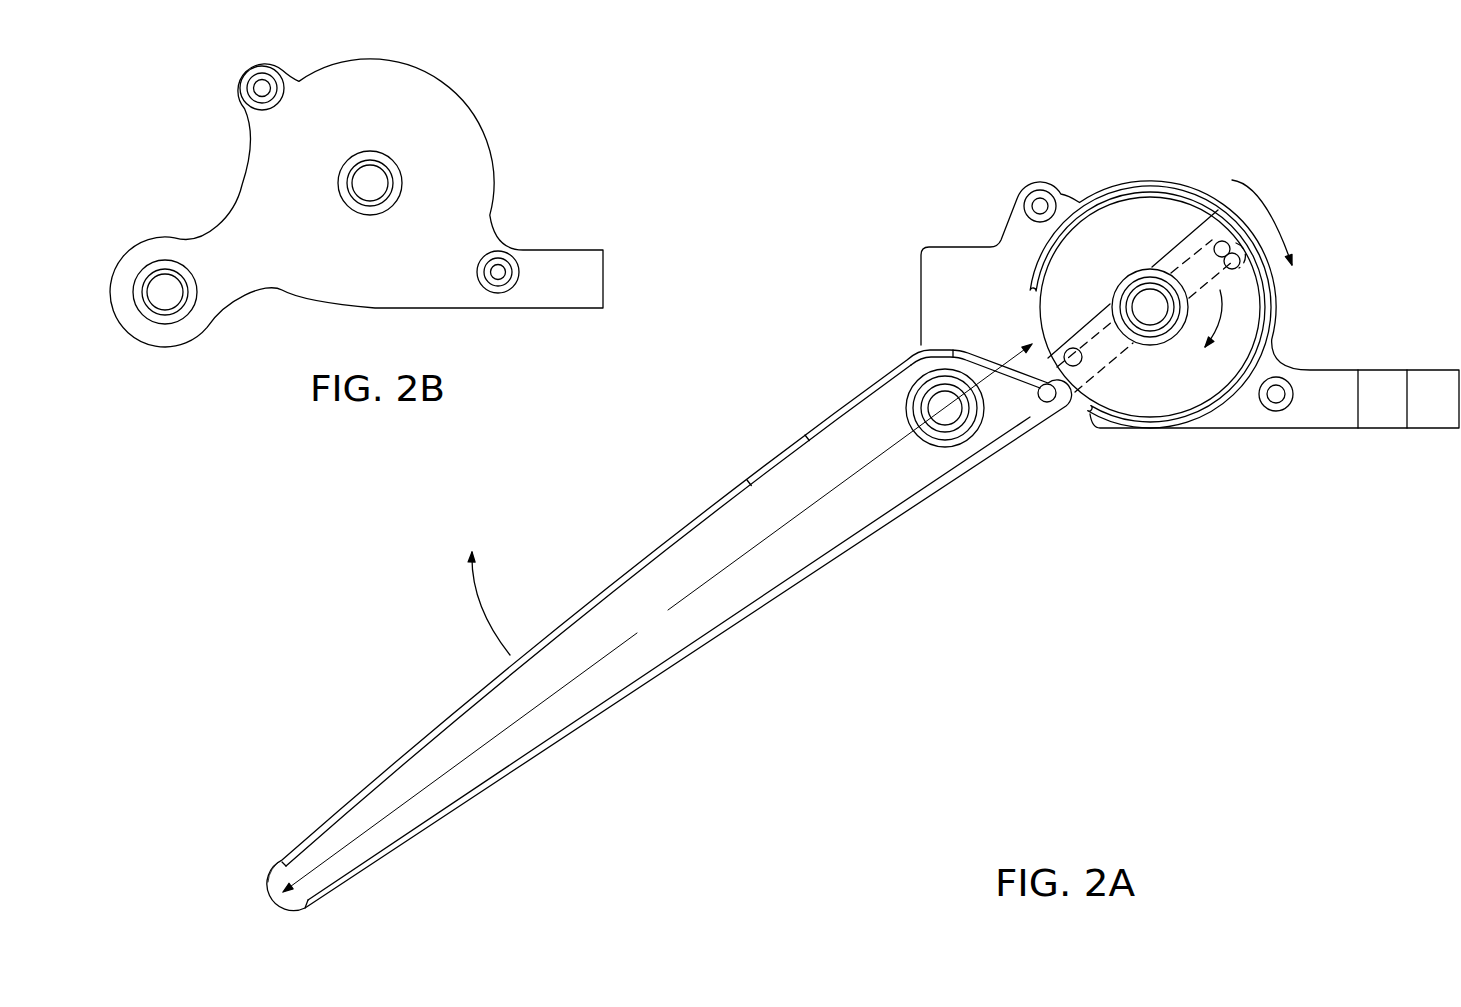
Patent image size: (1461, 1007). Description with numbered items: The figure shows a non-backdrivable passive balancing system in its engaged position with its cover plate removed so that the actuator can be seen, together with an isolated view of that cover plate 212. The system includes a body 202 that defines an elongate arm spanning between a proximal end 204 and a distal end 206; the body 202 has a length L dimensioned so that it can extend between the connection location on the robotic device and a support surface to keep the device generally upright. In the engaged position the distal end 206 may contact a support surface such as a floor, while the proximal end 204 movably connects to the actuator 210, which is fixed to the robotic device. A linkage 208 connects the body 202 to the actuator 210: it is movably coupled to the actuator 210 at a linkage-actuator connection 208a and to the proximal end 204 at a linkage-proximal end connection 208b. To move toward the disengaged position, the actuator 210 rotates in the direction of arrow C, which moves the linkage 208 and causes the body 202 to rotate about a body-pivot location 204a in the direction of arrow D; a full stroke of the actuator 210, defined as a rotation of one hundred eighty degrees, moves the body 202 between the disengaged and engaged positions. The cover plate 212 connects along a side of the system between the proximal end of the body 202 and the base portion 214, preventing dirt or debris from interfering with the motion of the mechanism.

In FIG. 2A, the body 202 is at (820, 538).
In FIG. 2A, the proximal end 204 is at (925, 368).
In FIG. 2A, the body-pivot location 204a is at (948, 418).
In FIG. 2A, the distal end 206 is at (300, 892).
In FIG. 2A, the linkage 208 is at (1093, 362).
In FIG. 2A, the linkage-actuator connection 208a is at (1228, 248).
In FIG. 2A, the linkage-proximal end connection 208b is at (1047, 398).
In FIG. 2A, the actuator 210 is at (1153, 208).
In FIG. 2B, the cover plate 212 is at (468, 190).
In FIG. 2A, the base portion 214 is at (1327, 432).
In FIG. 2A, the arrow C is at (1272, 216).
In FIG. 2A, the arrow D is at (479, 603).
In FIG. 2A, the length L is at (657, 618).